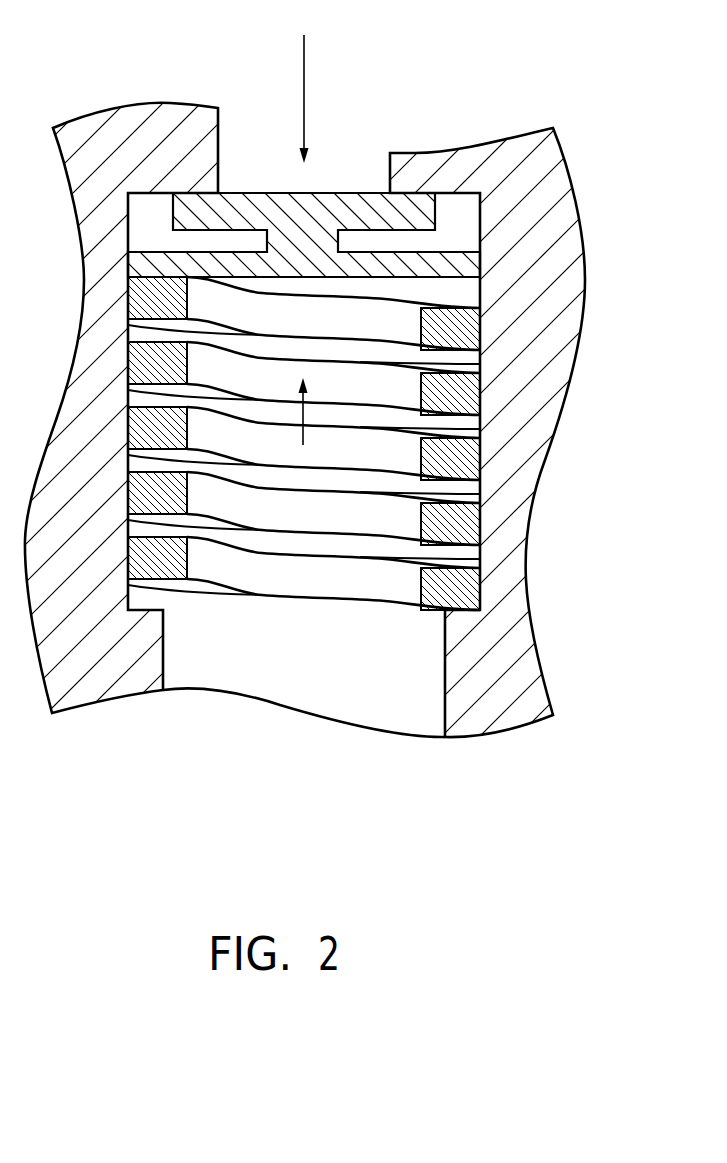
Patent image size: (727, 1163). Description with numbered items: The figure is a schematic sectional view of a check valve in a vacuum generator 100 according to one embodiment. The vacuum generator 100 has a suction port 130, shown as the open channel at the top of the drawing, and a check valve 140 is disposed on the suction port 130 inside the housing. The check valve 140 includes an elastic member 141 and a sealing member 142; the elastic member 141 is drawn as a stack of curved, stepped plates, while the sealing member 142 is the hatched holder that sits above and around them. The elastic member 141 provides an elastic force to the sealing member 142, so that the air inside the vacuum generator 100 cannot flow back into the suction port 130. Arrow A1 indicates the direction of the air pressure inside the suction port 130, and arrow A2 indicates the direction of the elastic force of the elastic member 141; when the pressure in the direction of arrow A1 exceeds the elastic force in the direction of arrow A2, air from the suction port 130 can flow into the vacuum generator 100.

The vacuum generator 100 is at (513, 188).
The suction port 130 is at (218, 150).
The check valve 140 is at (443, 52).
The elastic member 141 is at (357, 313).
The sealing member 142 is at (420, 213).
The arrow A1 is at (302, 83).
The arrow A2 is at (302, 435).